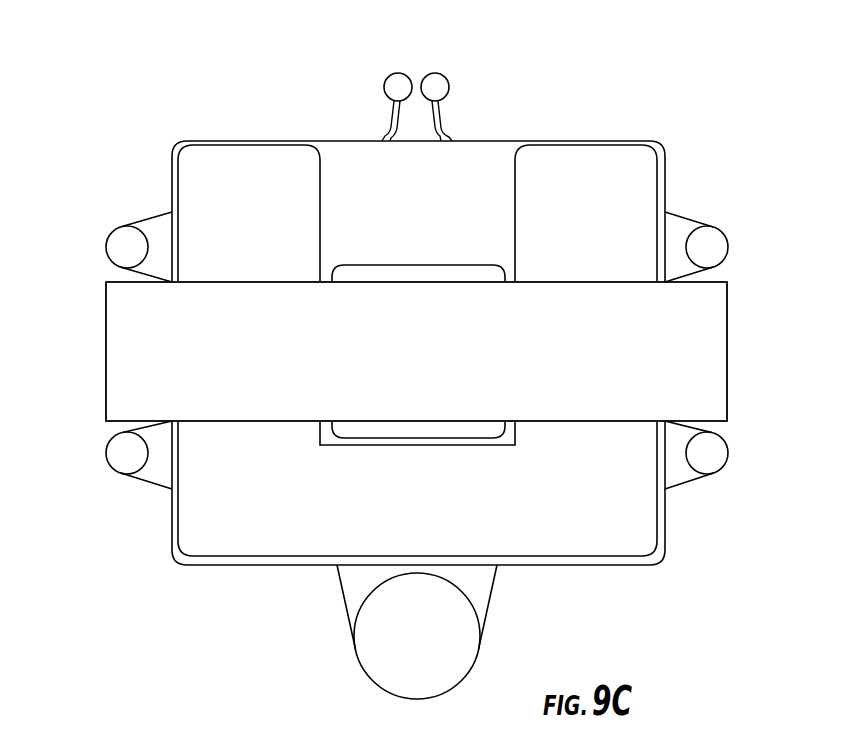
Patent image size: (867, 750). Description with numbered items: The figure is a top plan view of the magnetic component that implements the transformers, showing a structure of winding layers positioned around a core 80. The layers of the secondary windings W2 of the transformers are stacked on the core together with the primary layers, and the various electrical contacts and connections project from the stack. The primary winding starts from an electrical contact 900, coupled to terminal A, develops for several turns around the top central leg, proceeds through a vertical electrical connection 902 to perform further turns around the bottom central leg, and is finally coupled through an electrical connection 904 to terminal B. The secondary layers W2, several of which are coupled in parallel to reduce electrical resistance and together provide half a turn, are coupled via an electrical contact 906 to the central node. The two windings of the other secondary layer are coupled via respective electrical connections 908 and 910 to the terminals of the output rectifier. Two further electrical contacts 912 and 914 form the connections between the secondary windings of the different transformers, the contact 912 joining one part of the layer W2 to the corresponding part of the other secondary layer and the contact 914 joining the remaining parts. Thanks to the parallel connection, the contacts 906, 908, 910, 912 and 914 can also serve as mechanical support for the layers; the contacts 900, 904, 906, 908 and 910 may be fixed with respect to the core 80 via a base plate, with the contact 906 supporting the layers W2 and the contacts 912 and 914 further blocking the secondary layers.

The core 80 is at (728, 355).
The electrical contact 900 is at (452, 80).
The vertical electrical connection 902 is at (366, 70).
The electrical connection 904 is at (383, 88).
The electrical contact 906 is at (482, 648).
The electrical connection 908 is at (728, 452).
The electrical connection 910 is at (104, 455).
The electrical contact 912 is at (729, 245).
The electrical contact 914 is at (104, 252).
The secondary windings layer W2 is at (625, 140).